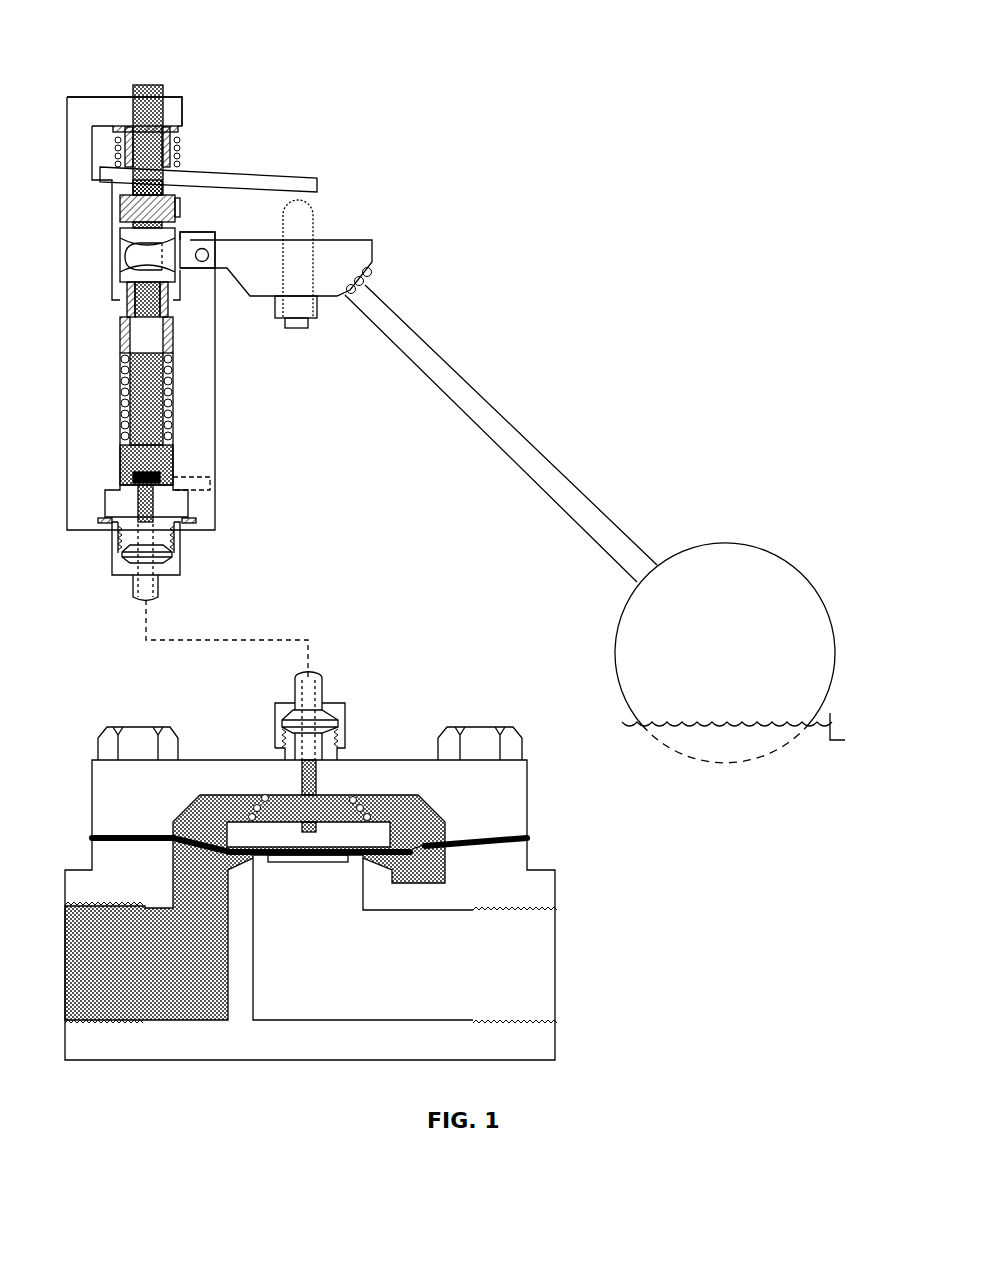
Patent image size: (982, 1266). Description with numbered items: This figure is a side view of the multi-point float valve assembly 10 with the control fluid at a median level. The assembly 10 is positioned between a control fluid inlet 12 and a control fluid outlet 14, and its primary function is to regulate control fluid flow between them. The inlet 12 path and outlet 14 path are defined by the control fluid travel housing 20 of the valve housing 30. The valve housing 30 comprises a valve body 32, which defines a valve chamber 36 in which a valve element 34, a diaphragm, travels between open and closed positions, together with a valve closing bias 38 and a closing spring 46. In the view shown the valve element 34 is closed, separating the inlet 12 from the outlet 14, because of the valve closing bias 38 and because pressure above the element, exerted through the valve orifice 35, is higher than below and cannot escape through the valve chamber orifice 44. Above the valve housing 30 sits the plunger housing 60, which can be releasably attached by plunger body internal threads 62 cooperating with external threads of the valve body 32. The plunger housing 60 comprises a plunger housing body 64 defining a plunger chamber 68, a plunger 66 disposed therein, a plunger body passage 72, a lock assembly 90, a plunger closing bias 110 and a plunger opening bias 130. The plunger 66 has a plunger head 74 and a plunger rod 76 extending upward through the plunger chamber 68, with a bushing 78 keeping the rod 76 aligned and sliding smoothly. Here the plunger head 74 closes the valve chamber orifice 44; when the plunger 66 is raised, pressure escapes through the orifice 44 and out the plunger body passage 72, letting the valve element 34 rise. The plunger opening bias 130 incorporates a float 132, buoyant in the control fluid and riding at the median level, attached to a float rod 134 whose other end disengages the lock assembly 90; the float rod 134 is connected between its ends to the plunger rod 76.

The valve assembly 10 is at (573, 243).
The control fluid inlet 12 is at (152, 962).
The control fluid outlet 14 is at (522, 963).
The control fluid travel housing 20 is at (79, 880).
The valve housing 30 is at (397, 700).
The valve body 32 is at (548, 885).
The valve element 34 is at (531, 838).
The valve orifice 35 is at (421, 845).
The valve chamber 36 is at (296, 800).
The valve closing bias 38 is at (254, 806).
The valve chamber orifice 44 is at (146, 500).
The closing spring 46 is at (361, 805).
The plunger housing 60 is at (266, 405).
The plunger body internal threads 62 is at (172, 545).
The plunger housing body 64 is at (178, 108).
The plunger 66 is at (151, 70).
The plunger chamber 68 is at (166, 382).
The plunger body passage 72 is at (211, 487).
The plunger head 74 is at (166, 450).
The plunger rod 76 is at (133, 86).
The bushing 78 is at (121, 335).
The lock assembly 90 is at (259, 143).
The plunger closing bias 110 is at (121, 395).
The plunger opening bias 130 is at (581, 448).
The float 132 is at (631, 615).
The float rod 134 is at (531, 457).